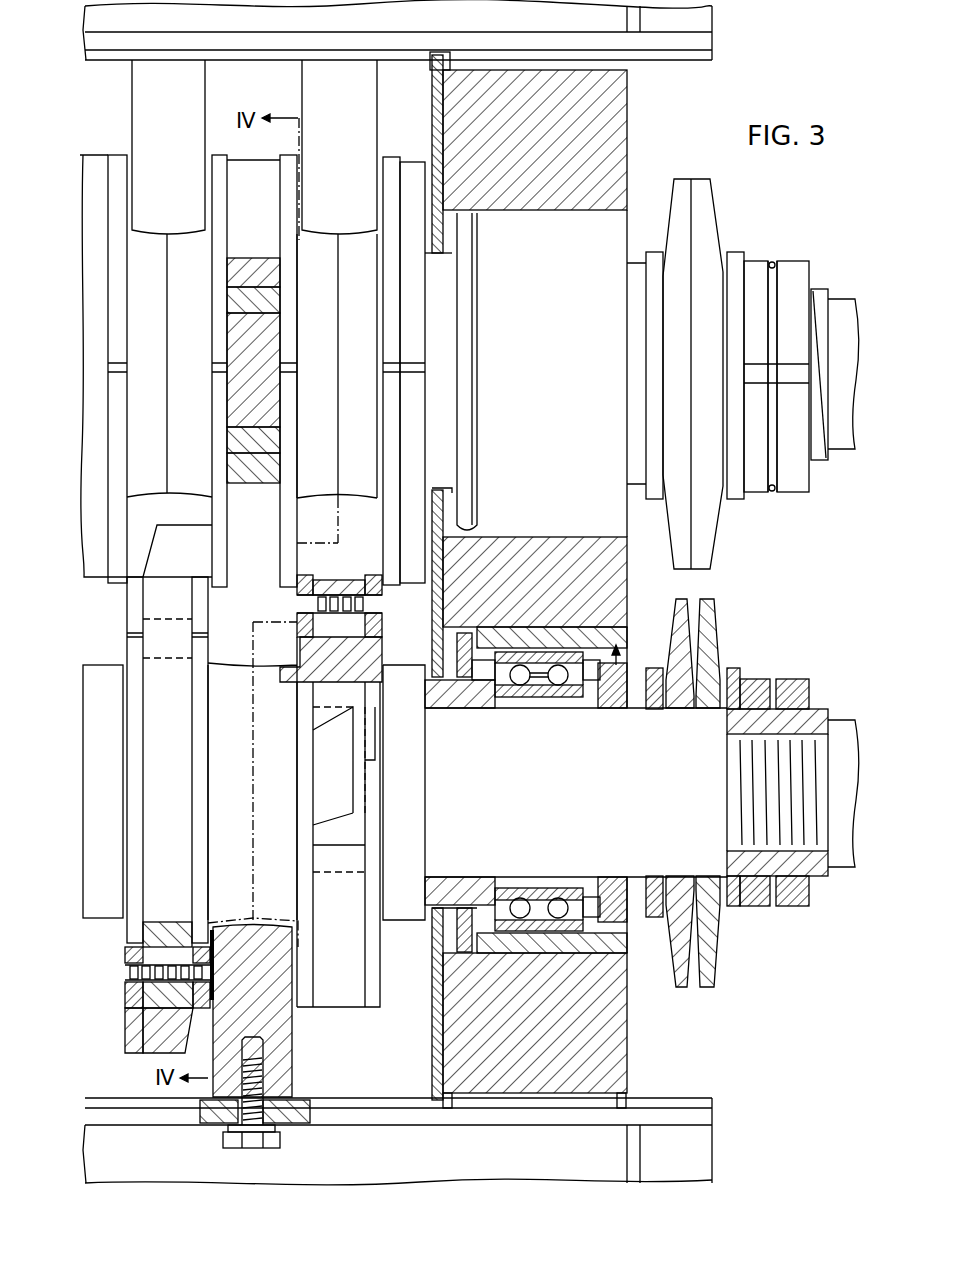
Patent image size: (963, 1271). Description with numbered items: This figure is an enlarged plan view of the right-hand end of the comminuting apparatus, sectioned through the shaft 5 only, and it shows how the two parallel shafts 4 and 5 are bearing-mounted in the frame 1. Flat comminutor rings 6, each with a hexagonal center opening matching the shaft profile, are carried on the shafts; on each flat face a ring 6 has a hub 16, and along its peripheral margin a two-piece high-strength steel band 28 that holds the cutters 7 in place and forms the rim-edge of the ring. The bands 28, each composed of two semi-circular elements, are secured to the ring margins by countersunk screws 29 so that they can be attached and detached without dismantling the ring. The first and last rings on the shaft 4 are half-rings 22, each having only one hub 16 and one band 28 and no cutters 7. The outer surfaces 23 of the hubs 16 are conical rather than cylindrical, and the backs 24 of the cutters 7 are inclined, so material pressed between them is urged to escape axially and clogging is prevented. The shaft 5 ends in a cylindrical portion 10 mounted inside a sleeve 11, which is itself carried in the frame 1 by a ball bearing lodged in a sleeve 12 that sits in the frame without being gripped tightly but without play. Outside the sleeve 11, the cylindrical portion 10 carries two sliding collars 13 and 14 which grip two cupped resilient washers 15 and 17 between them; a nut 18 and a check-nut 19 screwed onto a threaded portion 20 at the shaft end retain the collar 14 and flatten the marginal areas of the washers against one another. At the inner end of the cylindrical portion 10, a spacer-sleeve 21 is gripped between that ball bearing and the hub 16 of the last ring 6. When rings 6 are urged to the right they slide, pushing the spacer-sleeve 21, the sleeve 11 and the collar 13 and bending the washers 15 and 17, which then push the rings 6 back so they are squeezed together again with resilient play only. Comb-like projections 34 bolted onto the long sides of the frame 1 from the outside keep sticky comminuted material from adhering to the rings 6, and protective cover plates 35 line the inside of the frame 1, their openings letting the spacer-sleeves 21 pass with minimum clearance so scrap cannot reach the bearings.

The frame 1 is at (118, 28).
The shaft 4 is at (836, 437).
The shaft 5 is at (836, 715).
The comminutor ring 6 is at (258, 204).
The cutter 7 is at (237, 343).
The cylindrical portion 10 is at (518, 863).
The sleeve 11 is at (616, 880).
The sleeve 12 is at (598, 518).
The sliding collar 13 is at (655, 500).
The sliding collar 14 is at (736, 262).
The cupped resilient washer 15 is at (673, 178).
The hub 16 is at (360, 265).
The cupped resilient washer 17 is at (707, 178).
The nut 18 is at (753, 471).
The check-nut 19 is at (791, 475).
The threaded portion 20 is at (815, 454).
The spacer-sleeve 21 is at (457, 880).
The half-ring 22 is at (410, 185).
The outer surface 23 is at (183, 493).
The back 24 is at (176, 525).
The band 28 is at (220, 183).
The countersunk screw 29 is at (382, 604).
The comb-like projection 34 is at (188, 77).
The protective cover plate 35 is at (345, 58).